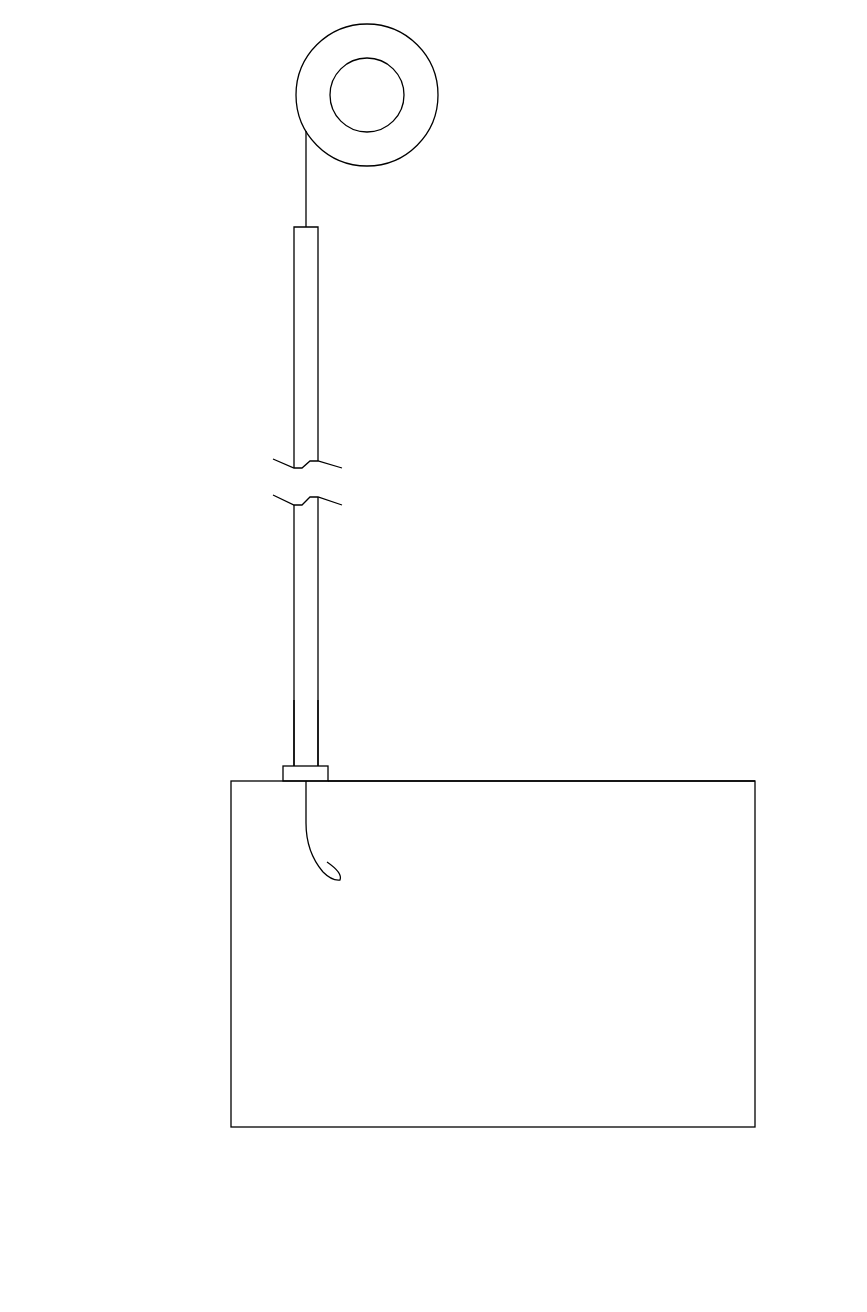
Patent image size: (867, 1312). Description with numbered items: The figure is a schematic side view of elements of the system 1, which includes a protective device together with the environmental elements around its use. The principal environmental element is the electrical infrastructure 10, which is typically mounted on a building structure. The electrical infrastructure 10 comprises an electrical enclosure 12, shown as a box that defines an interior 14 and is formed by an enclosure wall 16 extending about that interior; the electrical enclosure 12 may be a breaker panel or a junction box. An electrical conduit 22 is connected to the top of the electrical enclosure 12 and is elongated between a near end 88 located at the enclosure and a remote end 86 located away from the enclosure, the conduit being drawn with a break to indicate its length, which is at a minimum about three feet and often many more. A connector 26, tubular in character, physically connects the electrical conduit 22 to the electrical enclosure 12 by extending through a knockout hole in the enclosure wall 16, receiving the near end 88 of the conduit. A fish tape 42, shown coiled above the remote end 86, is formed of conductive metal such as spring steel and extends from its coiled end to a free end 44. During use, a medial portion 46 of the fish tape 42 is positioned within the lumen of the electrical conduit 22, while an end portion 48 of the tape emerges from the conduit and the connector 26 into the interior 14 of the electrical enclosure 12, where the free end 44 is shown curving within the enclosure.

The system 1 is at (480, 423).
The electrical infrastructure 10 is at (190, 76).
The fish tape 42 is at (306, 153).
The medial portion 46 is at (307, 222).
The remote end 86 is at (300, 253).
The electrical conduit 22 is at (305, 570).
The near end 88 is at (308, 739).
The connector 26 is at (293, 774).
The end portion 48 is at (304, 799).
The free end 44 is at (325, 871).
The electrical enclosure 12 is at (598, 781).
The interior 14 is at (502, 808).
The enclosure wall 16 is at (707, 781).